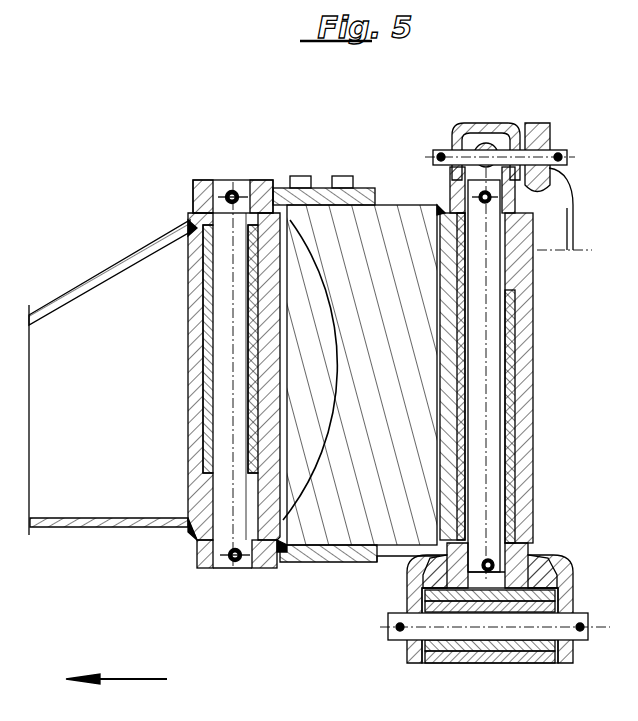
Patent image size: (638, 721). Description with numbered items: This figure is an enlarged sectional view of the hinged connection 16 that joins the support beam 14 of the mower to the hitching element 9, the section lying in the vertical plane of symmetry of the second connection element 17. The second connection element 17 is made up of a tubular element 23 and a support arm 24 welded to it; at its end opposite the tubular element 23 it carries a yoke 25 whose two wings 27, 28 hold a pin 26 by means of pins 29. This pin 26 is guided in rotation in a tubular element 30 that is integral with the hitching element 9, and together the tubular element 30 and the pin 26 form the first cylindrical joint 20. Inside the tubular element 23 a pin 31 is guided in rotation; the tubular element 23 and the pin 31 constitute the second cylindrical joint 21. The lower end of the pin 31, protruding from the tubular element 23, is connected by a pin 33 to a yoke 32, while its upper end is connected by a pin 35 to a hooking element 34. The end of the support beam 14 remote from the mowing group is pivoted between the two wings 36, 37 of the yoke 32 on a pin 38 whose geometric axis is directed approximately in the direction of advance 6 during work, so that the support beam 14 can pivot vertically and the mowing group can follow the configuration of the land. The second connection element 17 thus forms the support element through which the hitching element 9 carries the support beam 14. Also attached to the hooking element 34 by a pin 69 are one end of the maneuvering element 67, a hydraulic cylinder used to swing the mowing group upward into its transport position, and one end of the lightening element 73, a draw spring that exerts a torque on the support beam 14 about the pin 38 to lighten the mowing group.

The direction of advance 6 is at (125, 679).
The hitching element 9 is at (70, 298).
The support beam 14 is at (490, 665).
The hinged connection 16 is at (387, 203).
The second connection element 17 is at (352, 563).
The first cylindrical joint 20 is at (212, 180).
The second cylindrical joint 21 is at (514, 290).
The tubular element 23 is at (527, 327).
The support arm 24 is at (412, 213).
The yoke 25 is at (333, 375).
The pin 26 is at (190, 520).
The wing 27 is at (265, 182).
The wing 28 is at (262, 566).
The pins 29 is at (232, 190).
The tubular element 30 is at (190, 383).
The pin 31 is at (495, 378).
The yoke 32 is at (548, 562).
The pin 33 is at (494, 568).
The hooking element 34 is at (455, 130).
The pin 35 is at (492, 200).
The wing 36 is at (408, 665).
The wing 37 is at (568, 665).
The pin 38 is at (586, 613).
The maneuvering element 67 is at (545, 120).
The pin 69 is at (565, 155).
The lightening element 73 is at (485, 145).